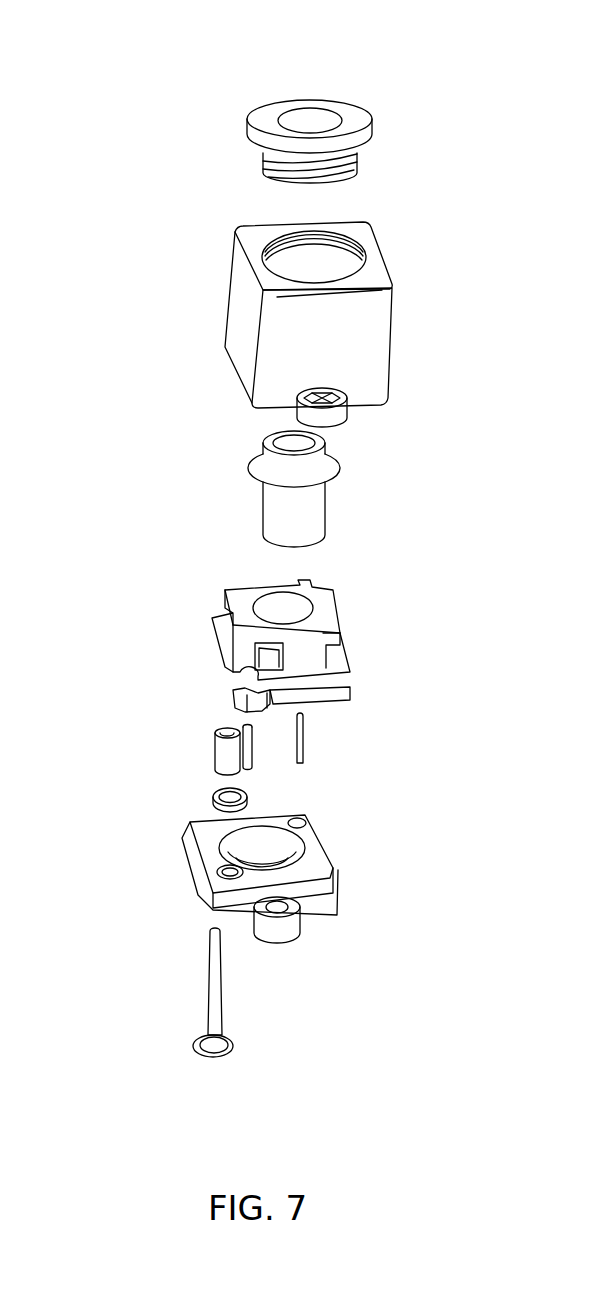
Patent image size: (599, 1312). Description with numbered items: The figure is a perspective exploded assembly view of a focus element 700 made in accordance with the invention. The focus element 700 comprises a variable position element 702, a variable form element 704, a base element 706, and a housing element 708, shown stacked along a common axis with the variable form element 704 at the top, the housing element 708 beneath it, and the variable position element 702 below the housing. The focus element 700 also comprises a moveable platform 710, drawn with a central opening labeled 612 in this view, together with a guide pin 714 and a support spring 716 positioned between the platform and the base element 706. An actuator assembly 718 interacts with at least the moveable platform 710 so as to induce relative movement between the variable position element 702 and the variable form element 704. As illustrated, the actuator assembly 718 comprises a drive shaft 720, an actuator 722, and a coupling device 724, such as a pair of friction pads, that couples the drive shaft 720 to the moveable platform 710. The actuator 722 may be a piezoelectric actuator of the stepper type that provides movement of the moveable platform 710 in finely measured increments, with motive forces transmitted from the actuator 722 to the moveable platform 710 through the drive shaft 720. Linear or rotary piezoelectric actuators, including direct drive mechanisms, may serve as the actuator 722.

The focus element 700 is at (457, 58).
The variable form element 704 is at (247, 133).
The housing element 708 is at (238, 324).
The variable position element 702 is at (310, 517).
The moveable platform 710 is at (205, 608).
The opening 612 is at (287, 612).
The support spring 716 is at (228, 695).
The guide pin 714 is at (305, 732).
The coupling device 724 is at (225, 748).
The base element 706 is at (192, 876).
The actuator assembly 718 is at (157, 1043).
The drive shaft 720 is at (218, 988).
The actuator 722 is at (230, 1040).